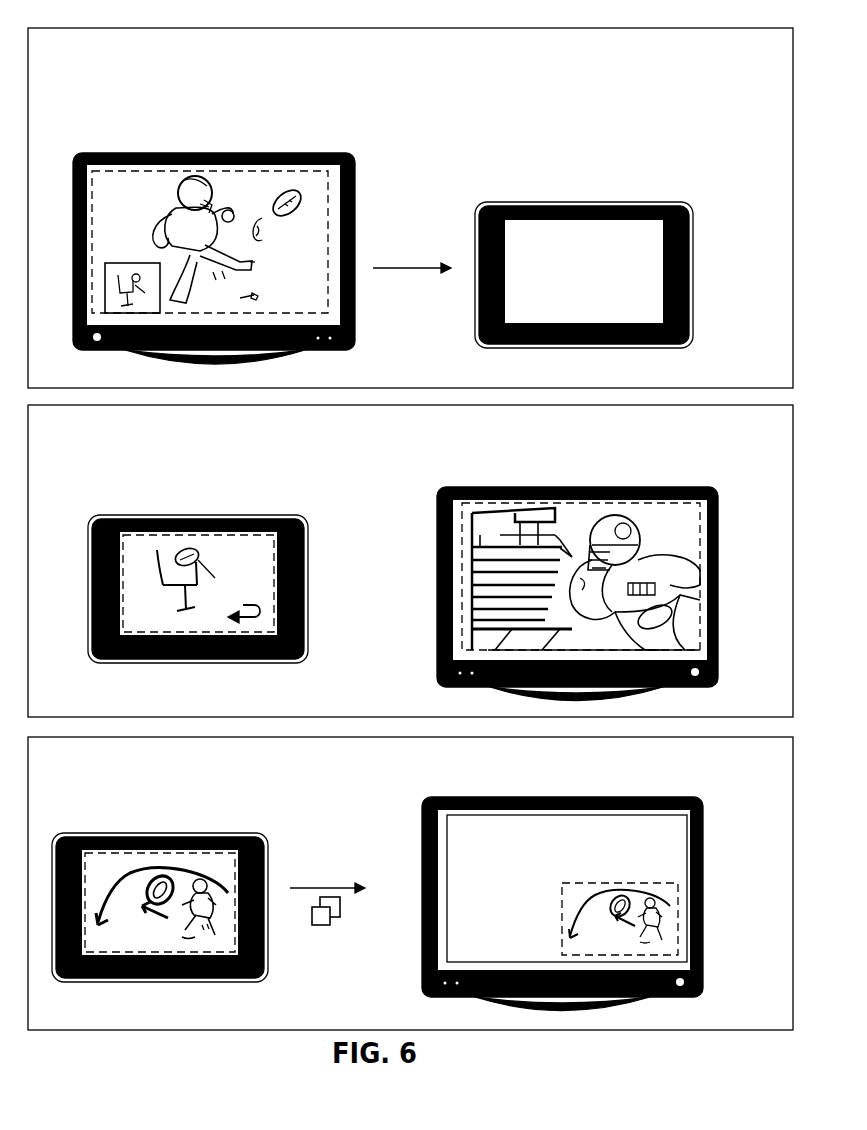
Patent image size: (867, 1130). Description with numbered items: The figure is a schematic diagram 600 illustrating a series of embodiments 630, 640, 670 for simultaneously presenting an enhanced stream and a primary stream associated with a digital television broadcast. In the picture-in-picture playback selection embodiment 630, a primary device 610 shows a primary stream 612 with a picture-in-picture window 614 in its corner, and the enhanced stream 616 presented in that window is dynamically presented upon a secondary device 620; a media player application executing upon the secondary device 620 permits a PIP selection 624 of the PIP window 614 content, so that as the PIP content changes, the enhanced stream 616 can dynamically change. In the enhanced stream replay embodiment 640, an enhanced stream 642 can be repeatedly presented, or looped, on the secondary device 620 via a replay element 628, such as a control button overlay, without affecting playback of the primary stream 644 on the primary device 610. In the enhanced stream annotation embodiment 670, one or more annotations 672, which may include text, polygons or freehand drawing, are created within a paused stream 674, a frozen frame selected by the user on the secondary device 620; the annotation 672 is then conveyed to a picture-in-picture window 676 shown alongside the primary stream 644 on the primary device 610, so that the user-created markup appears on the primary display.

The user interface flow diagram 600 is at (792, 20).
The picture-in-picture playback selection embodiment 630 is at (403, 50).
The primary stream 612 is at (247, 170).
The picture-in-picture window 614 is at (123, 263).
The primary device 610 is at (331, 153).
The enhanced stream 616 is at (607, 220).
The PIP selection 624 is at (412, 231).
The secondary device 620 is at (693, 241).
The enhanced stream replay embodiment 640 is at (297, 431).
The enhanced stream 642 is at (188, 535).
The replay element 628 is at (243, 607).
The primary stream 644 is at (632, 815).
The enhanced stream annotation embodiment 670 is at (332, 763).
The annotation 672 is at (172, 868).
The paused stream 674 is at (237, 872).
The picture-in-picture window 676 is at (677, 932).